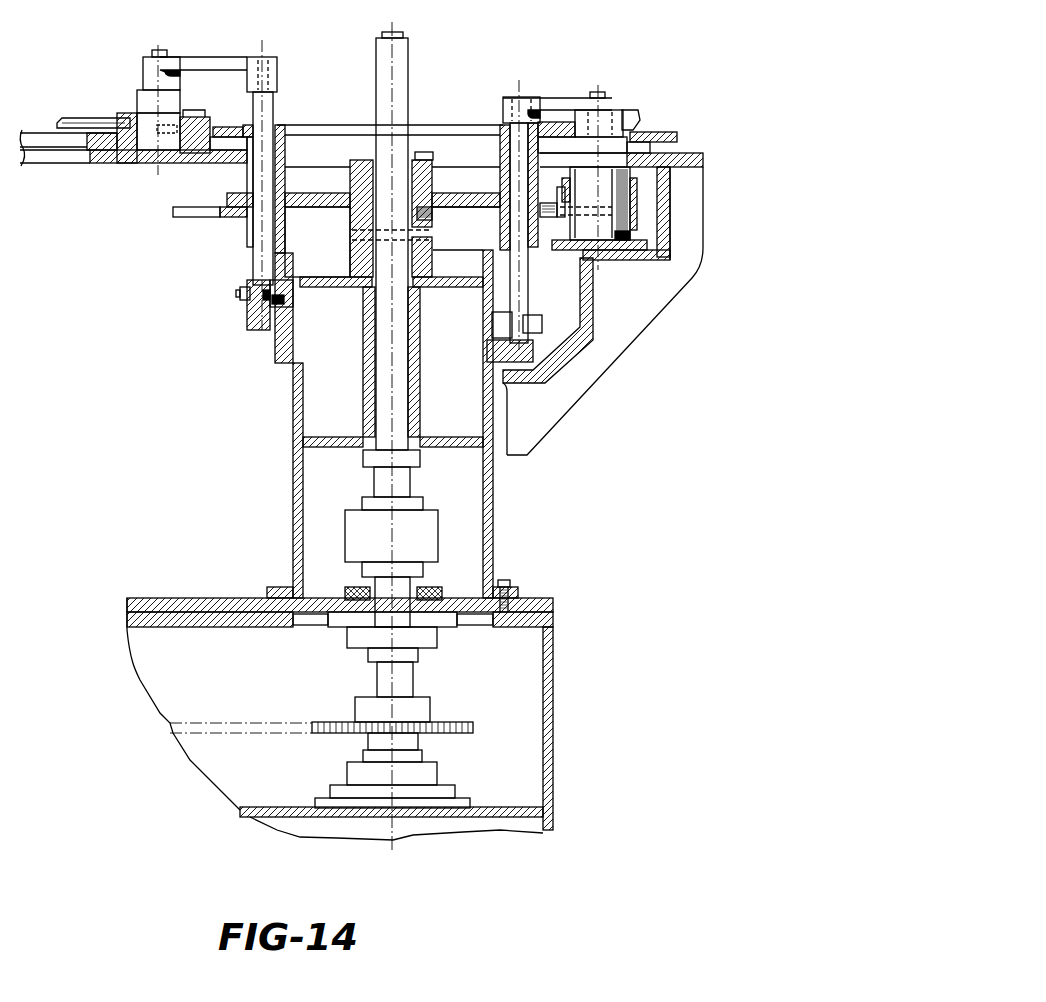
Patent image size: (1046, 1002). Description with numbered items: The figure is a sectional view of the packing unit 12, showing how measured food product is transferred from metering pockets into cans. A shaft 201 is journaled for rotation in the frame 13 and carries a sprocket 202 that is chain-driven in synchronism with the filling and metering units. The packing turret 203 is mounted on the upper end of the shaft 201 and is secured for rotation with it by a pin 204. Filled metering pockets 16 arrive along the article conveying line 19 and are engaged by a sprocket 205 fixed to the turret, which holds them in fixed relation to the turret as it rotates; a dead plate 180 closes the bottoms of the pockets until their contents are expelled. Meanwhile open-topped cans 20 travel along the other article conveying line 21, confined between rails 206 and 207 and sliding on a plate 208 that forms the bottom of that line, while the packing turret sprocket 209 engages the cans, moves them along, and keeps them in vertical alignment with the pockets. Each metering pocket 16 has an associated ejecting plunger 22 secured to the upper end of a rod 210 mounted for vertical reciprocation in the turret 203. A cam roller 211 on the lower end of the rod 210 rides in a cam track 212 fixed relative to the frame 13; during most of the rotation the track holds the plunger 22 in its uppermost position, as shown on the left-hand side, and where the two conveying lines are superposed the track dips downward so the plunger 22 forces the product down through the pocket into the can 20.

The packing unit 12 is at (205, 286).
The frame 13 is at (547, 647).
The metering pocket 16 is at (95, 99).
The article conveying line 19 is at (38, 136).
The can 20 is at (620, 235).
The article conveying line 21 is at (636, 222).
The ejecting plunger 22 is at (138, 98).
The dead plate 180 is at (690, 156).
The shaft 201 is at (407, 486).
The sprocket 202 is at (458, 722).
The packing turret 203 is at (306, 195).
The pin 204 is at (428, 239).
The sprocket 205 is at (235, 118).
The rail 206 is at (570, 188).
The rail 207 is at (638, 192).
The plate 208 is at (648, 252).
The packing turret sprocket 209 is at (561, 214).
The rod 210 is at (274, 112).
The cam roller 211 is at (273, 296).
The cam track 212 is at (268, 328).